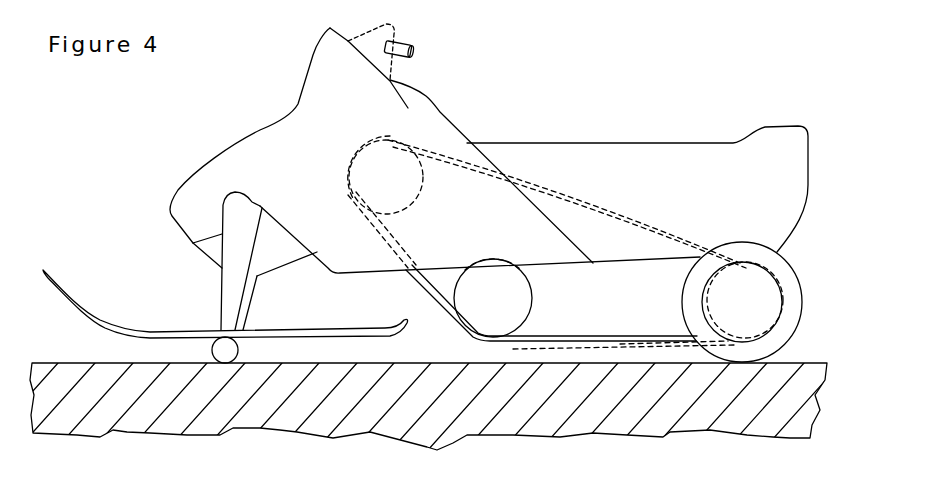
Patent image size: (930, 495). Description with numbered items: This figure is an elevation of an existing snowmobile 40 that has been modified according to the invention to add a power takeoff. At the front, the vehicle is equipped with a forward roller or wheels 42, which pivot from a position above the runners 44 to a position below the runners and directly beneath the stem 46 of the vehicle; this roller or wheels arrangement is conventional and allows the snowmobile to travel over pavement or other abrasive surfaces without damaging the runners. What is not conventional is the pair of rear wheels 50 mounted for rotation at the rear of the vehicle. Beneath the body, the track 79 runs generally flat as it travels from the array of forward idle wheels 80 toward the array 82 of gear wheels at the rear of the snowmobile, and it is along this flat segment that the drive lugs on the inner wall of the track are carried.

The snowmobile 40 is at (620, 90).
The forward roller or wheels 42 is at (207, 350).
The runners 44 is at (320, 328).
The stem 46 is at (193, 243).
The rear wheels 50 is at (800, 292).
The track 79 is at (623, 337).
The forward idle wheels 80 is at (533, 298).
The array of gear wheels 82 is at (778, 320).